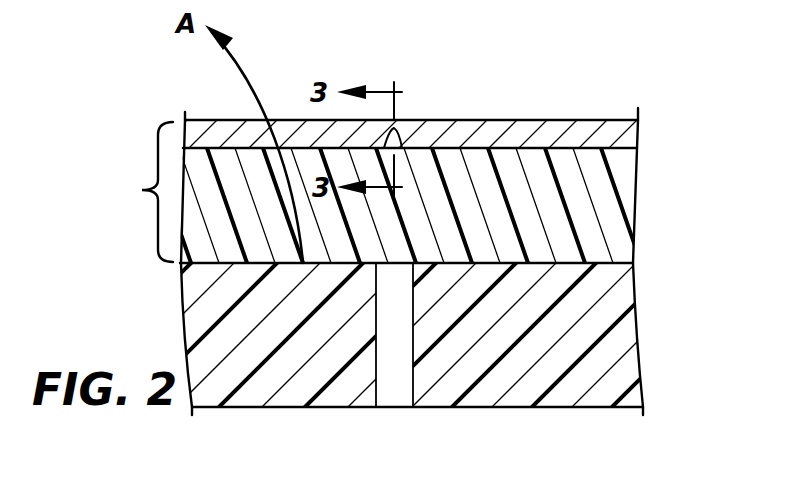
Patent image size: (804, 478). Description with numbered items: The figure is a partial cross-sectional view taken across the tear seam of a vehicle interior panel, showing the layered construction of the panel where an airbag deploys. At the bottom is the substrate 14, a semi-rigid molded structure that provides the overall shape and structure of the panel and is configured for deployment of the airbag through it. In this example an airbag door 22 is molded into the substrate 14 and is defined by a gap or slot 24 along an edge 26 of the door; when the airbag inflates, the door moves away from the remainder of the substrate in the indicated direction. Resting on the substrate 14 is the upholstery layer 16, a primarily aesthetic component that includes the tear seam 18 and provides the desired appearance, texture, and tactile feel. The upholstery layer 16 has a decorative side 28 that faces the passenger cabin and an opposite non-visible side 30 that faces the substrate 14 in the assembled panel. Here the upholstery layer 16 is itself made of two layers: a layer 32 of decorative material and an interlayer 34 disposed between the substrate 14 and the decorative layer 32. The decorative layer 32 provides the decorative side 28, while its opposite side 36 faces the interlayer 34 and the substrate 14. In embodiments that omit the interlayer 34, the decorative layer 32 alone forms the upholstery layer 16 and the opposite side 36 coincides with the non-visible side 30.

The substrate 14 is at (421, 281).
The upholstery layer 16 is at (140, 192).
The tear seam 18 is at (401, 118).
The airbag door 22 is at (290, 395).
The gap or slot 24 is at (398, 393).
The edge 26 is at (377, 358).
The decorative side 28 is at (413, 102).
The non-visible side 30 is at (612, 266).
The decorative layer 32 is at (603, 128).
The interlayer 34 is at (423, 234).
The opposite side of the decorative layer 36 is at (603, 150).